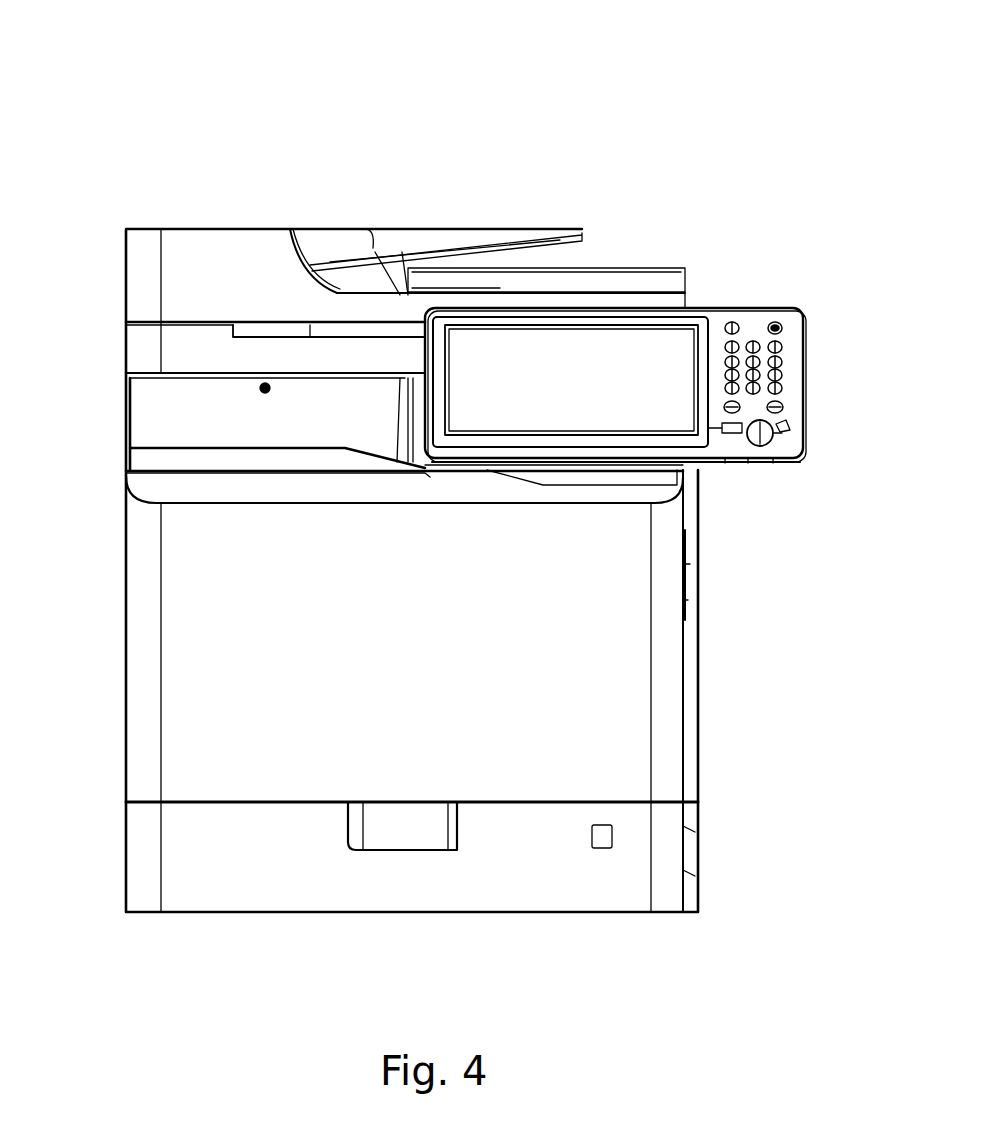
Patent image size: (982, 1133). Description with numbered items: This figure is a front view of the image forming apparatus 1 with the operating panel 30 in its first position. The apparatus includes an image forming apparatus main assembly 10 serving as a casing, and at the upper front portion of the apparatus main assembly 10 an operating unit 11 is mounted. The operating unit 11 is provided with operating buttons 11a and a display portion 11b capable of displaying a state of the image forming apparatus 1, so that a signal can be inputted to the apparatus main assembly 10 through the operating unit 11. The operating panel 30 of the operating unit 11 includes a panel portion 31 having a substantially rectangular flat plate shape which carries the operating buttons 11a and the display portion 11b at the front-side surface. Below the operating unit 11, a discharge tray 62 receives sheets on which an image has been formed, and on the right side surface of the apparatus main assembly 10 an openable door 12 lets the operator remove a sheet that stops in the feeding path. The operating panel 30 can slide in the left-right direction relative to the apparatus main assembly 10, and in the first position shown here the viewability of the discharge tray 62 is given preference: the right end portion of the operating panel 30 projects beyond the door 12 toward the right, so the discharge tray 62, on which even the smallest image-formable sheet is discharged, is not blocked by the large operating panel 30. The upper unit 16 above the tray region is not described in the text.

The image forming apparatus 1 is at (392, 92).
The image forming apparatus main assembly 10 is at (135, 660).
The operating unit 11 is at (716, 276).
The operating buttons 11a is at (782, 360).
The display portion 11b is at (607, 338).
The door 12 is at (692, 545).
The document reading device 16 is at (230, 192).
The operating panel 30 is at (752, 315).
The panel portion 31 is at (615, 385).
The discharge tray 62 is at (158, 420).